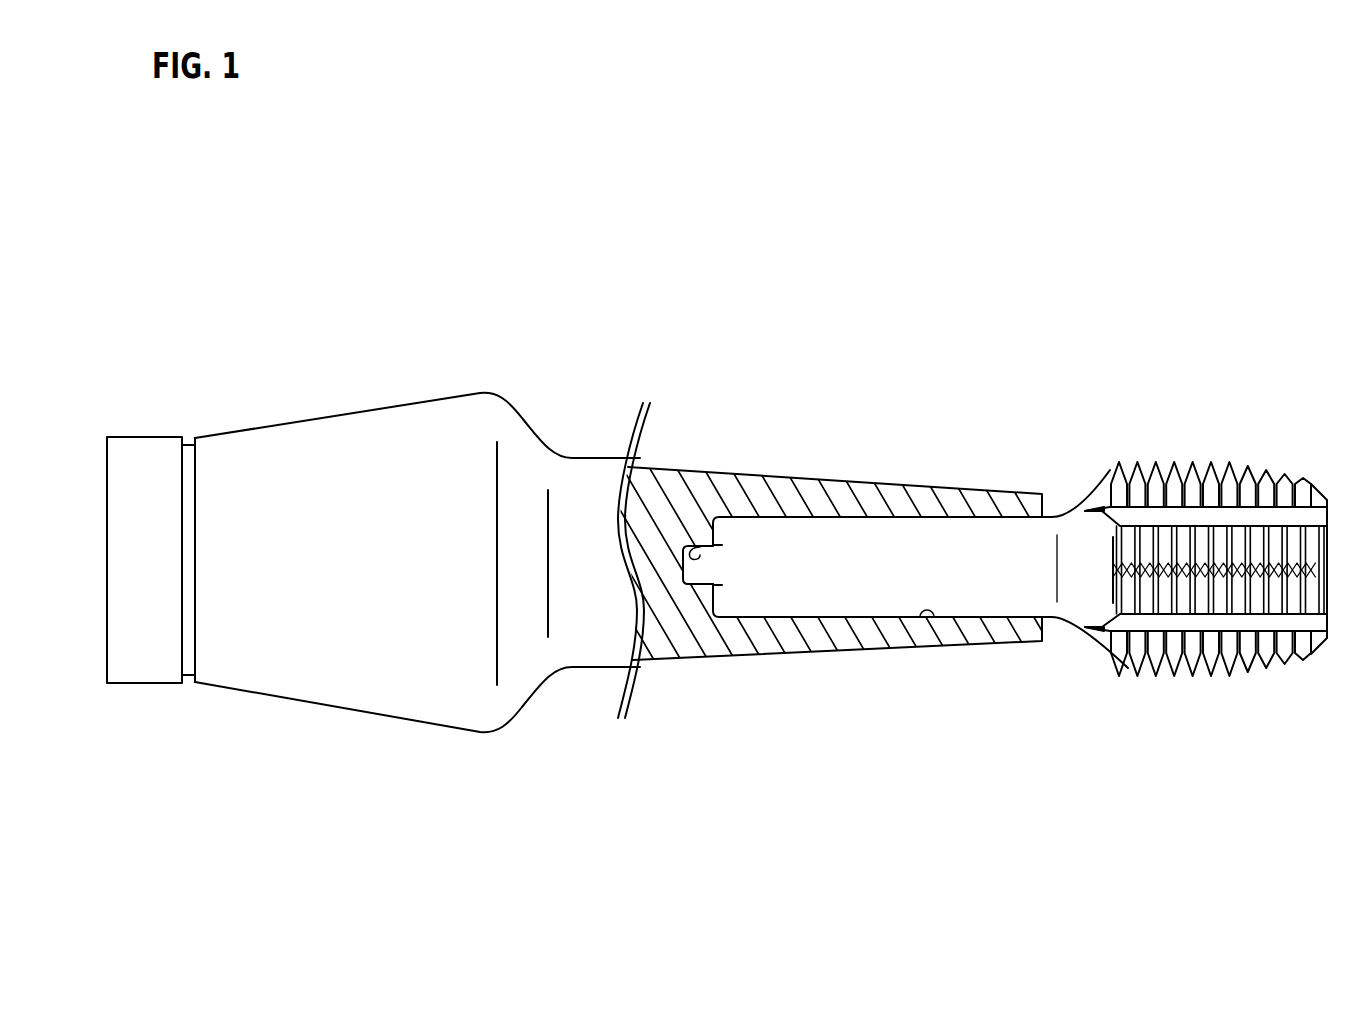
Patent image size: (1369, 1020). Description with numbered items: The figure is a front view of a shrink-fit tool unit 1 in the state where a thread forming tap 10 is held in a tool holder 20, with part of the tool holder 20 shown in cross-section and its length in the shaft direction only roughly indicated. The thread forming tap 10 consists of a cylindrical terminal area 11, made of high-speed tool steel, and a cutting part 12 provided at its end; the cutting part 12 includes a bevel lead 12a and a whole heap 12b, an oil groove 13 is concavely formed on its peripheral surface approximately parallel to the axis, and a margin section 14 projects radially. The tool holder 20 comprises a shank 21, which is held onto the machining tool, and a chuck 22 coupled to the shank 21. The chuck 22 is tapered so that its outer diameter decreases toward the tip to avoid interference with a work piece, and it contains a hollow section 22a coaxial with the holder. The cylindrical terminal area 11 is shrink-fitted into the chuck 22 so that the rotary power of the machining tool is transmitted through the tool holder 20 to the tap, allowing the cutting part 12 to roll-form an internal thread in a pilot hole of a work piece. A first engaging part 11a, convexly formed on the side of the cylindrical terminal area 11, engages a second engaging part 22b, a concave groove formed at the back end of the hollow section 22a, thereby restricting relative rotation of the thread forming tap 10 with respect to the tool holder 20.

The shrink-fit tool unit 1 is at (1134, 207).
The thread forming tap 10 is at (1277, 415).
The cylindrical terminal area 11 is at (803, 602).
The first engaging part 11a is at (697, 576).
The cutting part 12 is at (1320, 752).
The bevel lead 12a is at (1322, 692).
The whole heap 12b is at (1217, 692).
The oil groove 13 is at (1098, 640).
The margin section 14 is at (1106, 575).
The tool holder 20 is at (680, 358).
The shank 21 is at (330, 418).
The chuck 22 is at (808, 487).
The hollow section 22a is at (927, 617).
The second engaging part 22b is at (700, 547).